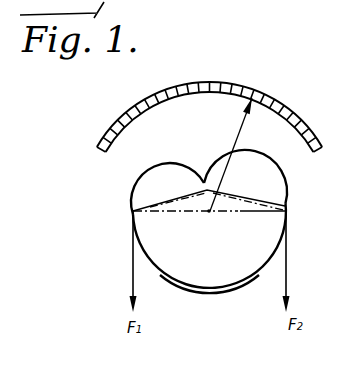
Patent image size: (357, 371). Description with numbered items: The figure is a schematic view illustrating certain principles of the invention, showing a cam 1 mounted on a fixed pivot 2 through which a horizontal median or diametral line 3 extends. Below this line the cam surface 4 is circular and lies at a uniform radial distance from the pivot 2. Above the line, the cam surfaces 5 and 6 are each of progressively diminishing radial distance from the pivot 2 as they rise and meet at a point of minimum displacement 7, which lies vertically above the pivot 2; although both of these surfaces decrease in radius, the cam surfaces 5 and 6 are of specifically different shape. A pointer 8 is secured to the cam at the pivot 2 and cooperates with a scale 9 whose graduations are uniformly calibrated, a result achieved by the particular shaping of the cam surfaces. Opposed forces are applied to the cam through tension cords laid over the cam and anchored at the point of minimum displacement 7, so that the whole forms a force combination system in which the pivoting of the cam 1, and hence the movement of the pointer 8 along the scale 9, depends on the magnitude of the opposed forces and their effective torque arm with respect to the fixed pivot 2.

The cam 1 is at (183, 272).
The fixed pivot 2 is at (208, 213).
The horizontal median or diametral line 3 is at (240, 212).
The cam surface 4 is at (228, 286).
The cam surface 5 is at (139, 178).
The cam surface 6 is at (287, 185).
The point of minimum displacement 7 is at (208, 197).
The pointer 8 is at (238, 136).
The scale 9 is at (252, 92).